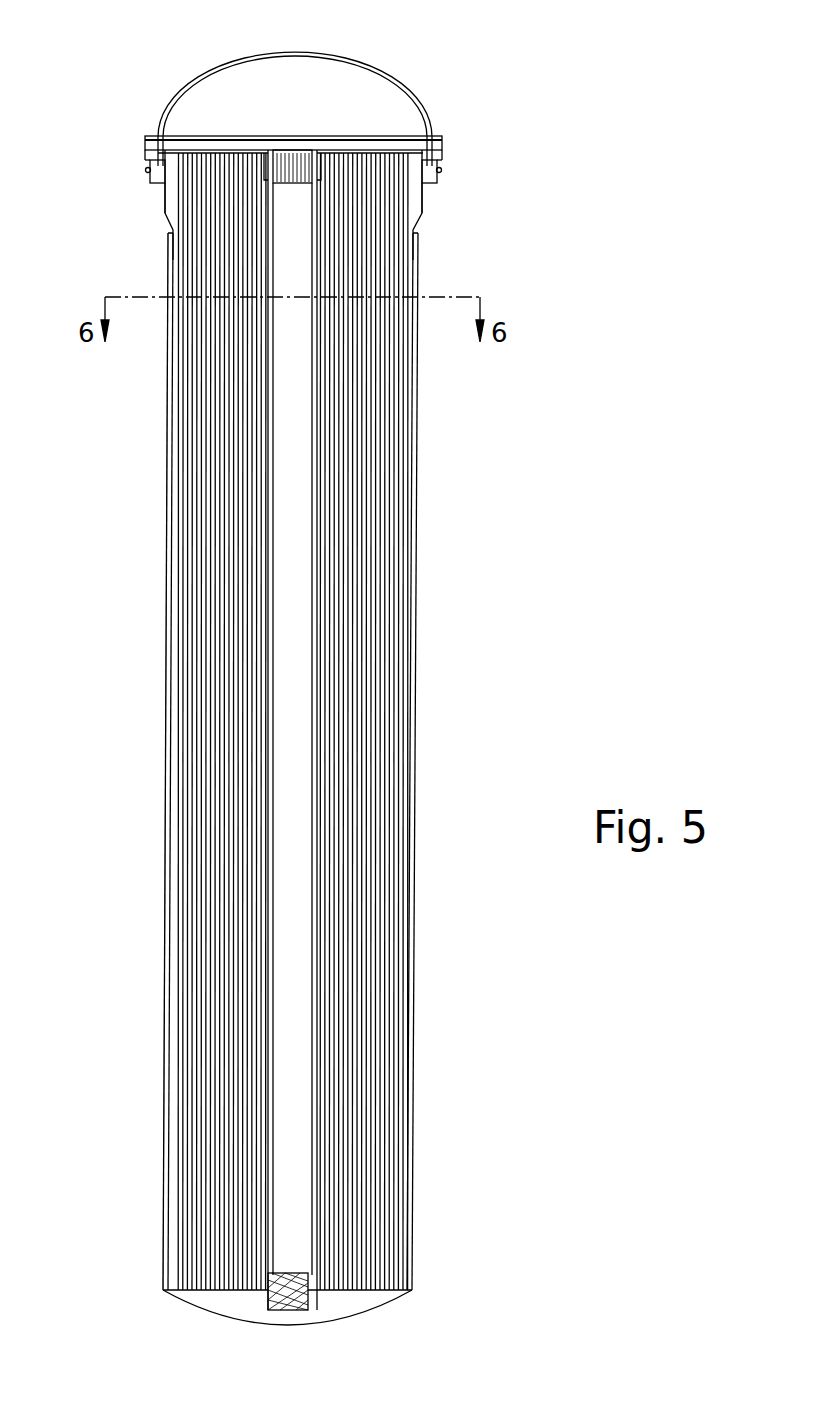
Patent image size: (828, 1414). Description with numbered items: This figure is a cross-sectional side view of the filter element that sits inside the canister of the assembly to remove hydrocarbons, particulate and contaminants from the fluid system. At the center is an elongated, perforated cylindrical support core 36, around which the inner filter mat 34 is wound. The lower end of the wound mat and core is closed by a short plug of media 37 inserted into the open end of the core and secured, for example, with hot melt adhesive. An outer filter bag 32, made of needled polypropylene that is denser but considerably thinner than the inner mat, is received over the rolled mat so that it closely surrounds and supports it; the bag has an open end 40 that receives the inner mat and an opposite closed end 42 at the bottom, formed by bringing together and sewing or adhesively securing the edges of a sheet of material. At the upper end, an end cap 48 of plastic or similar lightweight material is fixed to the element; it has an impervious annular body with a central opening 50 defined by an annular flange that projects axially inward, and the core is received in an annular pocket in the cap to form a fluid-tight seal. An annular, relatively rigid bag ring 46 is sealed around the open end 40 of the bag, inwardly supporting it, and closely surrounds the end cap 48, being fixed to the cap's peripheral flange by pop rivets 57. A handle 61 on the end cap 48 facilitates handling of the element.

The outer filter bag 32 is at (418, 585).
The inner filter mat 34 is at (395, 515).
The support core 36 is at (313, 380).
The plug of media 37 is at (273, 1276).
The open end 40 is at (420, 233).
The closed end 42 is at (373, 1310).
The bag ring 46 is at (440, 178).
The end cap 48 is at (370, 152).
The central opening 50 is at (296, 158).
The pop rivets 57 is at (150, 170).
The handle 61 is at (343, 58).